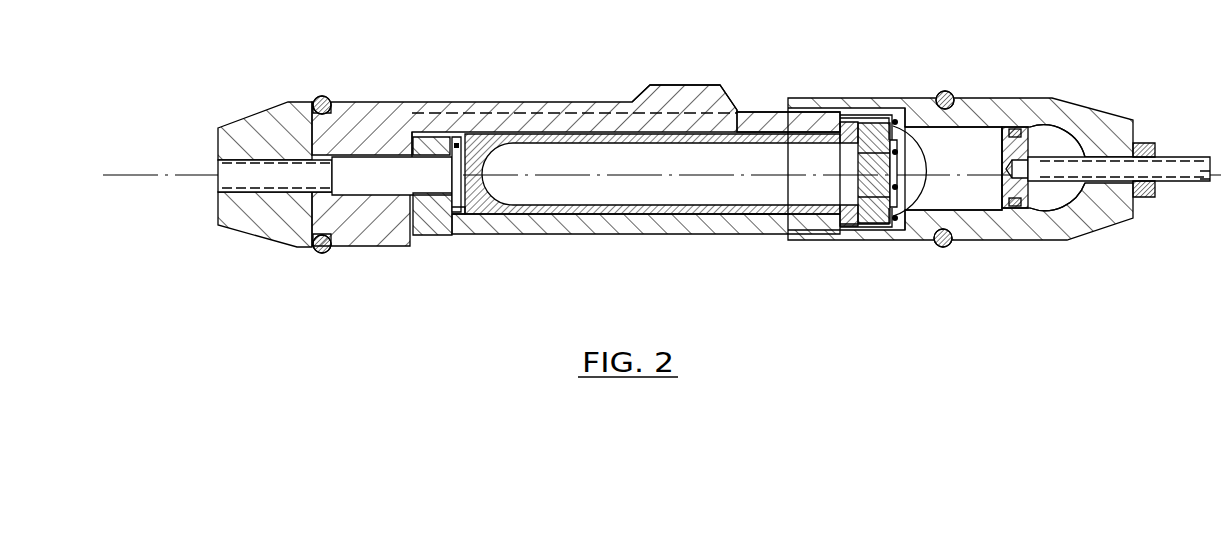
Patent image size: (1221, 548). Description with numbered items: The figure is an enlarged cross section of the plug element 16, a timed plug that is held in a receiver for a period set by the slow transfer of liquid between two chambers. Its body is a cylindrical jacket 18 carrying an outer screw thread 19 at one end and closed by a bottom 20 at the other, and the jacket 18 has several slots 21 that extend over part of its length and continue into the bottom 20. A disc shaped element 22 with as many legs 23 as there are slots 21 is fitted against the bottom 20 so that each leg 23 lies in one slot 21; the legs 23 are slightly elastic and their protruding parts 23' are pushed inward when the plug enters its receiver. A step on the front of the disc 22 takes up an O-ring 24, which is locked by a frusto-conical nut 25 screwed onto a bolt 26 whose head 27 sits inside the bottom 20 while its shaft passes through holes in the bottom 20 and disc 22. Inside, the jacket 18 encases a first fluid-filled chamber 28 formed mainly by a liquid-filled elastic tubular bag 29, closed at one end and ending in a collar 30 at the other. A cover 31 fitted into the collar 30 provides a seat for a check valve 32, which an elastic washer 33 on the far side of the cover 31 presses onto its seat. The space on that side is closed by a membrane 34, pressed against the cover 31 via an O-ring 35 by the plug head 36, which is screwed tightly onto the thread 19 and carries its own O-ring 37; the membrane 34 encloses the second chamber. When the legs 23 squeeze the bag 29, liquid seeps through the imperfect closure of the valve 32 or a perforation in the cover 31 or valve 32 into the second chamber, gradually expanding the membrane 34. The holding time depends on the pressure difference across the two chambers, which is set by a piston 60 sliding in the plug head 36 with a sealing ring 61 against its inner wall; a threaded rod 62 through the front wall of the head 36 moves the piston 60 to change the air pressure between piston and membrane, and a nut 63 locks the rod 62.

The plug element 16 is at (1045, 66).
The cylindrical jacket 18 is at (692, 236).
The outer screw thread 19 is at (808, 234).
The bottom 20 is at (430, 220).
The slots 21 is at (738, 108).
The disc shaped element 22 is at (372, 246).
The legs 23 is at (576, 100).
The protruding parts of legs 23' is at (684, 77).
The O-ring 24 is at (330, 99).
The frusto-conical nut 25 is at (263, 122).
The bolt 26 is at (228, 170).
The head of bolt 27 is at (458, 137).
The first fluid-filled chamber 28 is at (610, 216).
The tubular bag 29 is at (760, 212).
The collar 30 is at (860, 224).
The cover 31 is at (885, 122).
The check valve 32 is at (900, 140).
The elastic washer 33 is at (915, 128).
The membrane 34 is at (928, 155).
The O-ring 35 is at (900, 222).
The plug head 36 is at (1085, 228).
The O-ring 37 is at (952, 244).
The piston 60 is at (1032, 150).
The sealing ring 61 is at (1016, 127).
The threaded rod 62 is at (1183, 182).
The nut 63 is at (1152, 198).